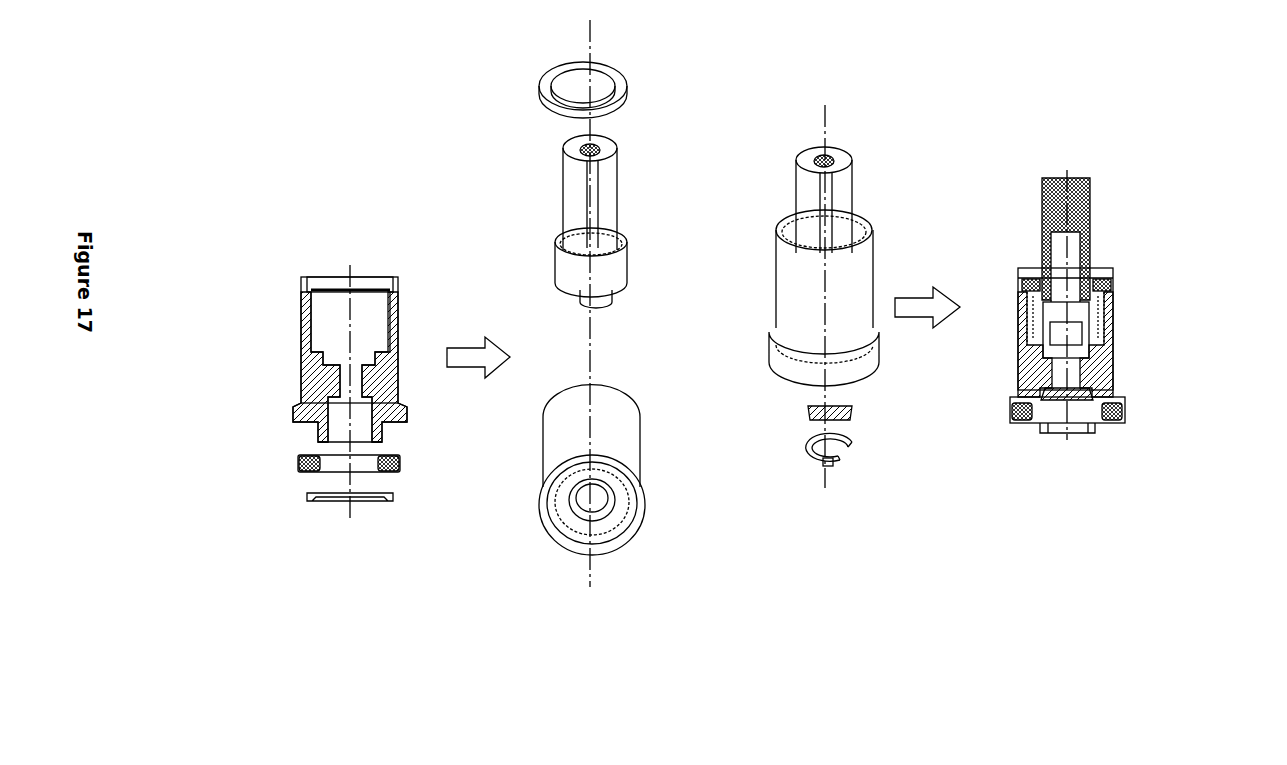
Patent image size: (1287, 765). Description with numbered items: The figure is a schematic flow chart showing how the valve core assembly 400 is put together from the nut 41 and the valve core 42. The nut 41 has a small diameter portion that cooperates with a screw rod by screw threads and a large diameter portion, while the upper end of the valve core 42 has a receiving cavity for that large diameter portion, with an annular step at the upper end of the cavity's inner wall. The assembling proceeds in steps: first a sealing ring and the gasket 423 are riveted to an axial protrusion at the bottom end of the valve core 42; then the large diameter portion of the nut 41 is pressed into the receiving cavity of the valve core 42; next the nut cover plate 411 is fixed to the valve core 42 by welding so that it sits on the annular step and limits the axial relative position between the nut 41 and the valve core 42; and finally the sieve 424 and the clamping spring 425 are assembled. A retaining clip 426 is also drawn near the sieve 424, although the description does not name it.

The valve core assembly 400 is at (1112, 337).
The nut 41 is at (573, 215).
The nut cover plate 411 is at (545, 83).
The valve core 42 is at (317, 377).
The gasket 423 is at (308, 495).
The sieve 424 is at (845, 418).
The clamping spring 425 is at (298, 457).
The retaining clip 426 is at (828, 470).